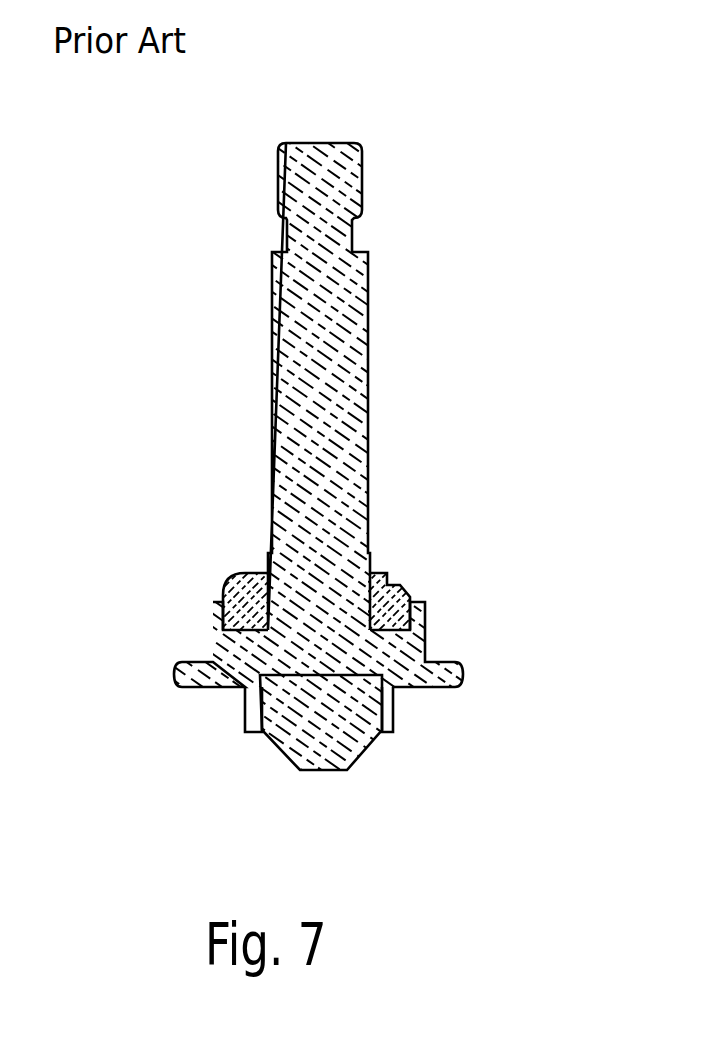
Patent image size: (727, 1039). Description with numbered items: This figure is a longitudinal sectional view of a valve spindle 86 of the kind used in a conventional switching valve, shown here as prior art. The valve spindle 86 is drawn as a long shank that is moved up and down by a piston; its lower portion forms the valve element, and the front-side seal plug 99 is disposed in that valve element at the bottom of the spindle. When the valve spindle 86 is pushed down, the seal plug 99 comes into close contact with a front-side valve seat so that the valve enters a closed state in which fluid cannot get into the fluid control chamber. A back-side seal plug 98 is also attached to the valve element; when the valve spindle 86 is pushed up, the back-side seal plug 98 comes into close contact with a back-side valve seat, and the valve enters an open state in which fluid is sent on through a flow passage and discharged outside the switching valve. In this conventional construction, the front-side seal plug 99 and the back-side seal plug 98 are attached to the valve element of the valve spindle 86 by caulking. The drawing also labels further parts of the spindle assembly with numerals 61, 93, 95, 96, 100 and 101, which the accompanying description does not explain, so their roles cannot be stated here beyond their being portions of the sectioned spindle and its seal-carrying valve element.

The fastener 61 is at (272, 372).
The valve spindle 86 is at (340, 302).
The flange 93 is at (182, 677).
The flange body 95 is at (425, 600).
The collar 96 is at (247, 712).
The back-side seal plug 98 is at (388, 582).
The front-side seal plug 99 is at (352, 768).
The seal ring 100 is at (240, 600).
The bore 101 is at (358, 745).